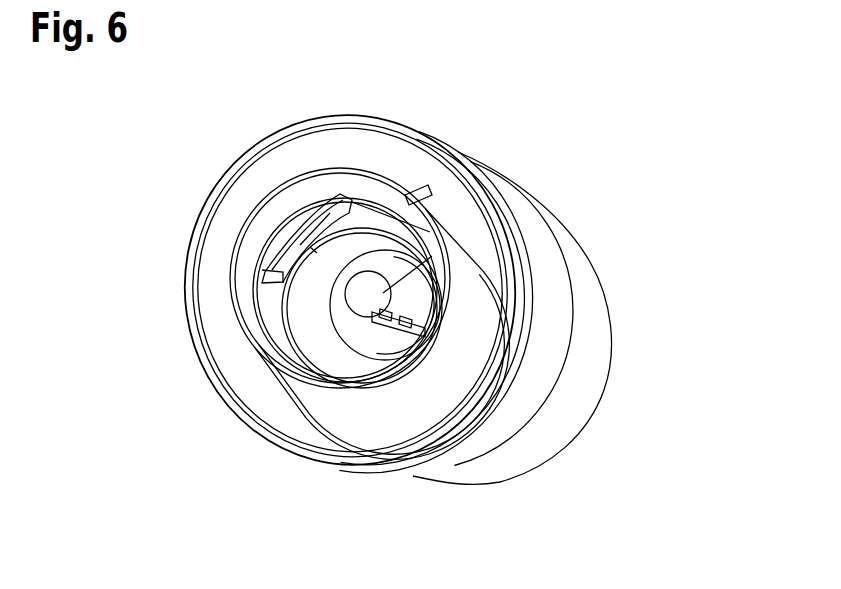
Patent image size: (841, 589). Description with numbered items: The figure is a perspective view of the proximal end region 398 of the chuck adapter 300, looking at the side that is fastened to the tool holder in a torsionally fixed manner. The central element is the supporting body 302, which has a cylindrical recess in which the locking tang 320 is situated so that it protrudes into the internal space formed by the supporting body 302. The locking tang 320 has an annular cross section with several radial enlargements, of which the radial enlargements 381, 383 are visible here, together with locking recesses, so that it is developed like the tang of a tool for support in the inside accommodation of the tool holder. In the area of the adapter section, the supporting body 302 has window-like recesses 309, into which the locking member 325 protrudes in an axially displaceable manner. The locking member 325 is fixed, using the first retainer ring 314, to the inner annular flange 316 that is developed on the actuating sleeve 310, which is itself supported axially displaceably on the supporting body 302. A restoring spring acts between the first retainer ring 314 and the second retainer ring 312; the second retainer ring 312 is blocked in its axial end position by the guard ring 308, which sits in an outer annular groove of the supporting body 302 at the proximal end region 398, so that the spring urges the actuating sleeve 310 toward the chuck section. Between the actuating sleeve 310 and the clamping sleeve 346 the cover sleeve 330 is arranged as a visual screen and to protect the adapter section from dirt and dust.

The chuck adapter 300 is at (558, 160).
The supporting body 302 is at (237, 333).
The guard ring 308 is at (400, 380).
The window-like recess 309 is at (268, 285).
The actuating sleeve 310 is at (328, 123).
The second retainer ring 312 is at (243, 382).
The first retainer ring 314 is at (282, 242).
The inner annular flange 316 is at (368, 205).
The locking tang 320 is at (433, 255).
The locking member 325 is at (295, 292).
The cover sleeve 330 is at (500, 178).
The clamping sleeve 346 is at (593, 310).
The radial enlargement 381 is at (356, 272).
The radial enlargement 383 is at (255, 380).
The proximal end region 398 is at (232, 130).